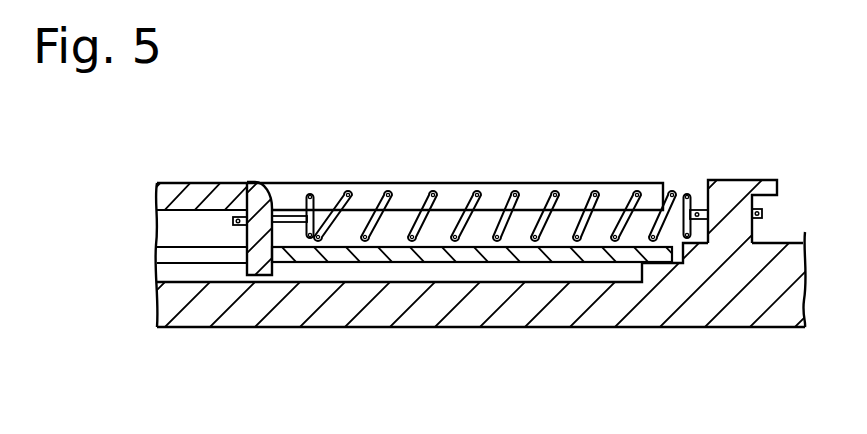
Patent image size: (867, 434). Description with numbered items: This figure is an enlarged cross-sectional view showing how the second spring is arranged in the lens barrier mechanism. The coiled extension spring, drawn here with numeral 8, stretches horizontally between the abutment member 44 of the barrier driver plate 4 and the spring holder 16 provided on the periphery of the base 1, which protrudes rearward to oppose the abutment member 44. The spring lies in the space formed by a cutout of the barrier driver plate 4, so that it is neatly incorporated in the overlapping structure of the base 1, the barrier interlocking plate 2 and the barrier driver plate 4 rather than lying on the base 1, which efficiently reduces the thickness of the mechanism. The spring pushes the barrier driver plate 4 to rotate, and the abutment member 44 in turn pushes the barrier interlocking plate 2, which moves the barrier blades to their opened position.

The base 1 is at (722, 308).
The barrier interlocking plate 2 is at (345, 258).
The barrier driver plate 4 is at (188, 185).
The coil spring 8 is at (557, 192).
The spring holder 16 is at (732, 192).
The abutment member 44 is at (258, 268).